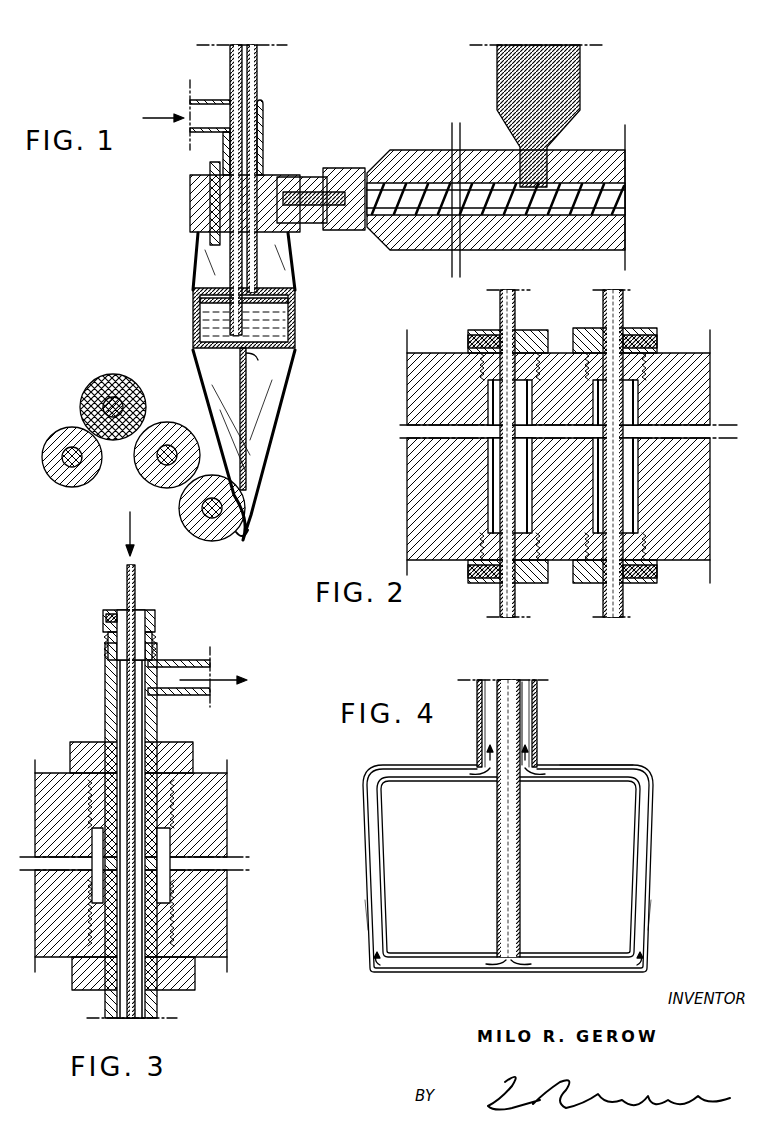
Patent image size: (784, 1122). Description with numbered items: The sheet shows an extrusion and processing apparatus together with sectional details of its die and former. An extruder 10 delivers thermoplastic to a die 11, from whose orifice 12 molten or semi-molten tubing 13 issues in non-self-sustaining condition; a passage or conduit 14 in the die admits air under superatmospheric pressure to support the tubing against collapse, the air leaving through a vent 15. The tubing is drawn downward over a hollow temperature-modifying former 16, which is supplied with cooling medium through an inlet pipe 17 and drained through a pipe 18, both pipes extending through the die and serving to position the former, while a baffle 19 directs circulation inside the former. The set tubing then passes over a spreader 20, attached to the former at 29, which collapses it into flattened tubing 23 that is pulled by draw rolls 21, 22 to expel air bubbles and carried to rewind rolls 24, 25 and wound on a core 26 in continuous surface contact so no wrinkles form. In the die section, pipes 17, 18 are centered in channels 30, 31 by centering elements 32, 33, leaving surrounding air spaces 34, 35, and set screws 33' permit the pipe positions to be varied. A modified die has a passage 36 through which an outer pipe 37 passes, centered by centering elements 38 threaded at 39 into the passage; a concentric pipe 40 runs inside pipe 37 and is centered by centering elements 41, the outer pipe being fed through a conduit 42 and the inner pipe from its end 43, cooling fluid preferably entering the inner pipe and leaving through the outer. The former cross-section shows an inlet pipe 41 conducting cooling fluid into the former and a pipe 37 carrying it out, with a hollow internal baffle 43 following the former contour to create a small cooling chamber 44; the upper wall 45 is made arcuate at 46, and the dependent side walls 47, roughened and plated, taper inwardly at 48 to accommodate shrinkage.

In FIG. 1, the extruder 10 is at (601, 150).
In FIG. 1, the die 11 is at (282, 176).
In FIG. 2, the die 11 is at (703, 404).
In FIG. 1, the orifice 12 is at (192, 226).
In FIG. 1, the tubing 13 is at (293, 262).
In FIG. 1, the passage or conduit 14 is at (196, 100).
In FIG. 1, the vent 15 is at (209, 168).
In FIG. 1, the temperature-modifying former 16 is at (296, 327).
In FIG. 1, the inlet pipe 17 is at (259, 75).
In FIG. 2, the inlet pipe 17 is at (624, 313).
In FIG. 1, the pipe 18 is at (233, 78).
In FIG. 2, the pipe 18 is at (516, 315).
In FIG. 1, the baffle 19 is at (200, 309).
In FIG. 1, the spreader 20 is at (247, 455).
In FIG. 1, the draw roll 21 is at (216, 538).
In FIG. 1, the draw roll 22 is at (140, 477).
In FIG. 1, the flattened tubing 23 is at (181, 521).
In FIG. 1, the rewind roll 24 is at (62, 485).
In FIG. 1, the rewind roll 25 is at (82, 406).
In FIG. 1, the core 26 is at (123, 402).
In FIG. 1, the attachment point 29 is at (257, 354).
In FIG. 2, the channel 30 is at (487, 398).
In FIG. 2, the channel 31 is at (637, 401).
In FIG. 2, the centering element 32 is at (660, 336).
In FIG. 2, the centering element 33 is at (491, 465).
In FIG. 2, the set screws 33' is at (579, 439).
In FIG. 2, the air space 34 is at (628, 472).
In FIG. 2, the air space 35 is at (492, 472).
In FIG. 3, the passage 36 is at (92, 836).
In FIG. 3, the pipe 37 is at (105, 692).
In FIG. 4, the pipe 37 is at (538, 735).
In FIG. 3, the centering elements 38 is at (190, 752).
In FIG. 3, the threads 39 is at (150, 863).
In FIG. 3, the concentric pipe 40 is at (136, 1004).
In FIG. 3, the centering elements / inner pipe 41 is at (156, 621).
In FIG. 4, the centering elements / inner pipe 41 is at (523, 704).
In FIG. 3, the conduit 42 is at (200, 660).
In FIG. 3, the end of pipe / internal baffle 43 is at (137, 571).
In FIG. 4, the end of pipe / internal baffle 43 is at (562, 783).
In FIG. 4, the internal cooling chamber 44 is at (376, 893).
In FIG. 4, the upper wall 45 is at (602, 765).
In FIG. 4, the arcuate wall 46 is at (650, 779).
In FIG. 4, the dependent side walls 47 is at (365, 835).
In FIG. 4, the inward taper 48 is at (370, 945).